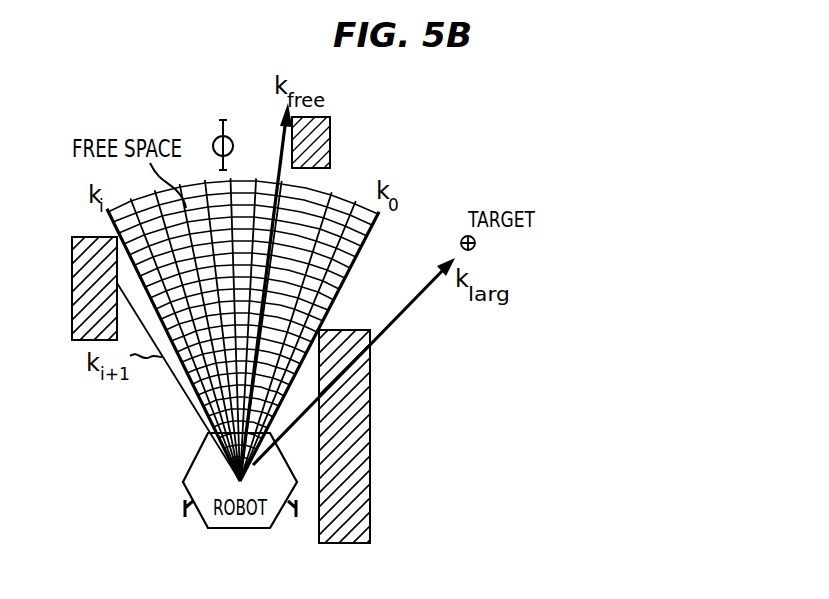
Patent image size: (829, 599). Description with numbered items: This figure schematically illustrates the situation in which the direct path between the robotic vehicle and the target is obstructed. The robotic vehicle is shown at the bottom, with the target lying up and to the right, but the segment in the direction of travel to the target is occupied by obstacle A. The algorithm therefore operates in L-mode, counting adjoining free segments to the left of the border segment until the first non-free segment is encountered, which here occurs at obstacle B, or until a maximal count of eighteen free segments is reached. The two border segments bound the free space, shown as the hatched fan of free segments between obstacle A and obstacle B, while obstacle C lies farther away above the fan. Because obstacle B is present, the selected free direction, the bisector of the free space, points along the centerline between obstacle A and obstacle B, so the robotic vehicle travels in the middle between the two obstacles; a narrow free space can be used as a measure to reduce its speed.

The obstacle A is at (344, 436).
The obstacle B is at (94, 288).
The obstacle C is at (311, 142).